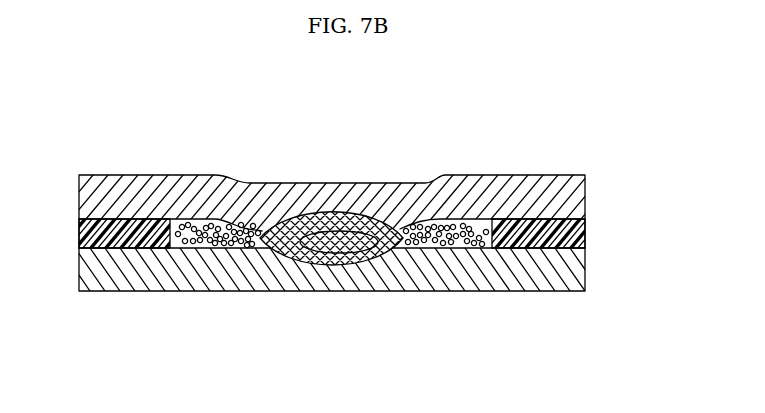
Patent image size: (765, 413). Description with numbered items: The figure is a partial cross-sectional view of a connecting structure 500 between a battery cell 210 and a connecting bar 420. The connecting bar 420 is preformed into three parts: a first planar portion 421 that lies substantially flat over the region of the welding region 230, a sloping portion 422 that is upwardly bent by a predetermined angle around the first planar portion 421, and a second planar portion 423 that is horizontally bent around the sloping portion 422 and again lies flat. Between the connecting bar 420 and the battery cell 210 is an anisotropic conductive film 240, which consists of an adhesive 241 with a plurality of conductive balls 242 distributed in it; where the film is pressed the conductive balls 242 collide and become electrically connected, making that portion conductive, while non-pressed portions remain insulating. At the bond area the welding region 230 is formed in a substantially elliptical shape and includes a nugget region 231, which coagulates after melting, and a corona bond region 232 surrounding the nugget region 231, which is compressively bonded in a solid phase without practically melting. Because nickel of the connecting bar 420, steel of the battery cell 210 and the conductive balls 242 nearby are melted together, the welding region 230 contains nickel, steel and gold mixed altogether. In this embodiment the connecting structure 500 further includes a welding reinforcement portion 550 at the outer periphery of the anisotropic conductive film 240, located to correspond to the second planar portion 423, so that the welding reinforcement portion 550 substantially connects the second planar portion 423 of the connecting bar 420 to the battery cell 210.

The connecting structure 500 is at (588, 134).
The connecting bar 420 is at (324, 166).
The first planar portion 421 is at (352, 183).
The sloping portion 422 is at (420, 183).
The second planar portion 423 is at (388, 108).
The battery cell 210 is at (455, 277).
The anisotropic conductive film 240 is at (332, 299).
The adhesive 241 is at (187, 248).
The conductive balls 242 is at (223, 248).
The welding region 230 is at (330, 295).
The nugget region 231 is at (327, 260).
The corona bond region 232 is at (367, 262).
The welding reinforcement portion 550 is at (120, 248).